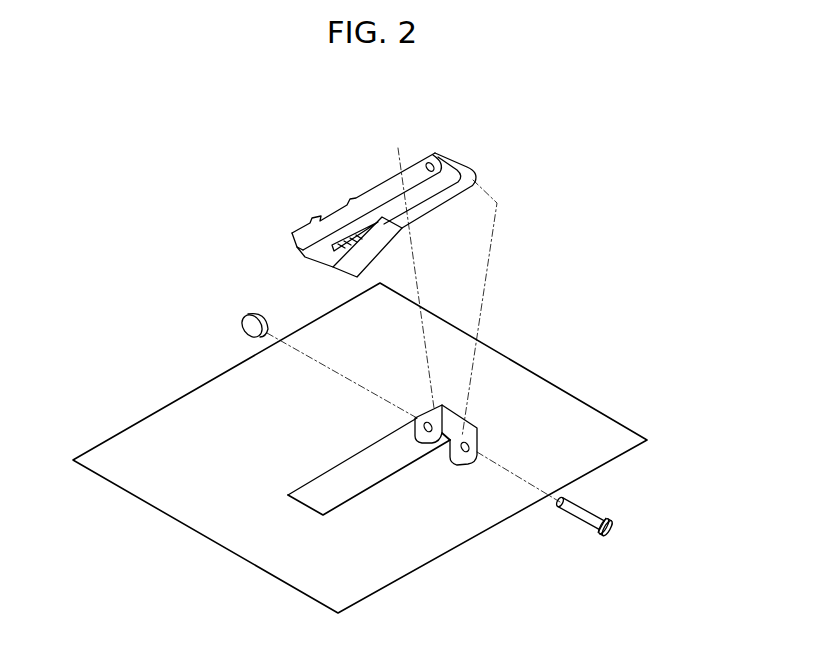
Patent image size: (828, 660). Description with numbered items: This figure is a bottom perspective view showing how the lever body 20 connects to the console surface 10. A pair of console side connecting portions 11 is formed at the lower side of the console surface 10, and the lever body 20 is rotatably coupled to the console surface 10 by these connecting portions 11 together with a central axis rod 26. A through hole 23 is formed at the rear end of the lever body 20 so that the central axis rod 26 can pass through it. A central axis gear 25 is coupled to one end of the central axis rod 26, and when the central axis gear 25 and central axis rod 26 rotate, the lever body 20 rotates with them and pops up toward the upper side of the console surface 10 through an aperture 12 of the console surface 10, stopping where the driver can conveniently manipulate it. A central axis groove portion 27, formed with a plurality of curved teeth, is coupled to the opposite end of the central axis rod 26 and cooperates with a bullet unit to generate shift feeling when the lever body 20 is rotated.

The console surface 10 is at (156, 438).
The console side connecting portion 11 is at (463, 460).
The aperture 12 is at (369, 468).
The lever body 20 is at (377, 183).
The through hole 23 is at (428, 162).
The central axis gear 25 is at (617, 537).
The central axis rod 26 is at (594, 512).
The central axis groove portion 27 is at (245, 321).